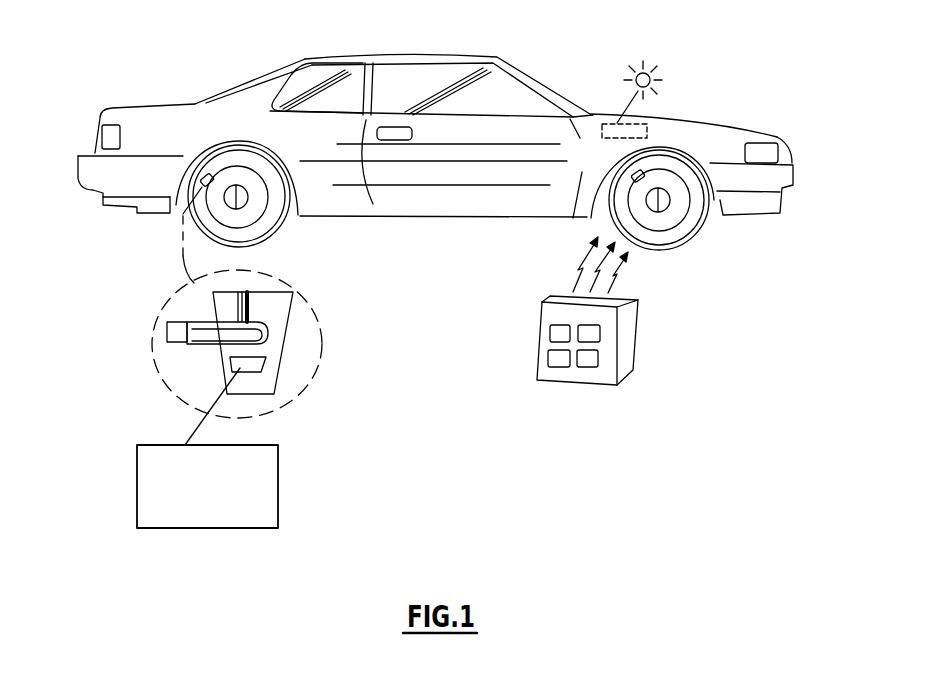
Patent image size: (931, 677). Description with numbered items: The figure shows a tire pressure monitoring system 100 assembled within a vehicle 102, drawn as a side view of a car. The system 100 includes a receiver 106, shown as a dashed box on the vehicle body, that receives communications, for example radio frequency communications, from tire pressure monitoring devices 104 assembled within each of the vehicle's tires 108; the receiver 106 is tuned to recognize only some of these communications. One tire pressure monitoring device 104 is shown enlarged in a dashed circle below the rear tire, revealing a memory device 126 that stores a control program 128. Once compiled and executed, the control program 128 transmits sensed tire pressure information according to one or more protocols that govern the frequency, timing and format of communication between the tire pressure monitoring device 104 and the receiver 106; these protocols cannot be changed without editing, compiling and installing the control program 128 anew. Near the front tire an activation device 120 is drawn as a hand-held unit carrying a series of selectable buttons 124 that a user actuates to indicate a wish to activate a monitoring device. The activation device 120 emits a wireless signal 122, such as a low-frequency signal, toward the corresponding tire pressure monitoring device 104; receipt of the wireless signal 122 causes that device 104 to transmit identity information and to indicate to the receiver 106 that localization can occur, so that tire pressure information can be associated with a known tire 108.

The tire pressure monitoring system 100 is at (738, 104).
The vehicle 102 is at (325, 63).
The tire pressure monitoring device 104 is at (204, 172).
The receiver 106 is at (650, 128).
The tire 108 is at (268, 220).
The activation device 120 is at (603, 374).
The wireless signal 122 is at (648, 279).
The selectable buttons 124 is at (546, 380).
The memory device 126 is at (248, 366).
The control program 128 is at (200, 528).